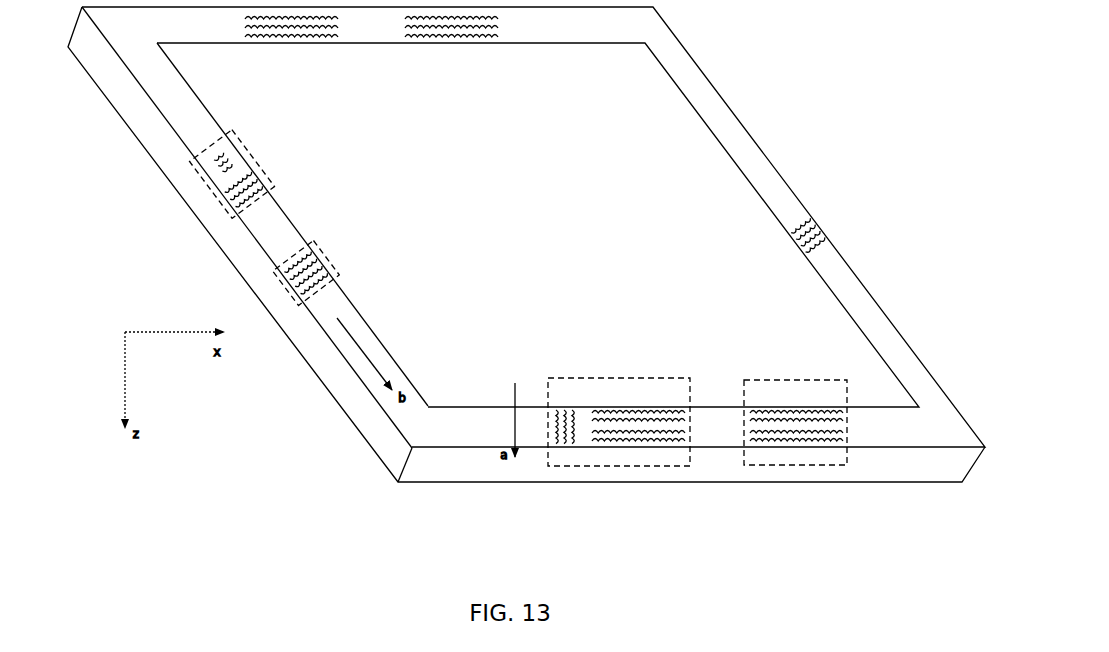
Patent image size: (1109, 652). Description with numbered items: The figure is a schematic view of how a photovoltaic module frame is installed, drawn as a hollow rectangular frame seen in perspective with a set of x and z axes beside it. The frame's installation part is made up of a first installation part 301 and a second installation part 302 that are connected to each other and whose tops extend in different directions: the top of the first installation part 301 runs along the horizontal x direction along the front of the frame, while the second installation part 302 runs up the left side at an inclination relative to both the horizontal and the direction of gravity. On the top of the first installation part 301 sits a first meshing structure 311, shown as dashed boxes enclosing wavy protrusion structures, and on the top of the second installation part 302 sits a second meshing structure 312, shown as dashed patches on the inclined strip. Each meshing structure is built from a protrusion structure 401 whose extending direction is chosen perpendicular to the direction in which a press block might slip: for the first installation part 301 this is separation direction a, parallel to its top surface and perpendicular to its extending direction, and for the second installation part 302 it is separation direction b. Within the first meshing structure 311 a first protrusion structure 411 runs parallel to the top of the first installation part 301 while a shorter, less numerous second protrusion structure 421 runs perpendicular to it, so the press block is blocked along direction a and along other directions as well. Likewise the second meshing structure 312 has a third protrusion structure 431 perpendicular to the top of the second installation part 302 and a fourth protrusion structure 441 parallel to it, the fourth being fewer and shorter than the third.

The first installation part 301 is at (448, 488).
The second installation part 302 is at (216, 253).
The first meshing structure 311 is at (625, 470).
The second meshing structure 312 is at (207, 193).
The protrusion structure 401 is at (289, 151).
The first protrusion structure 411 is at (611, 445).
The second protrusion structure 421 is at (554, 445).
The third protrusion structure 431 is at (255, 178).
The fourth protrusion structure 441 is at (224, 157).